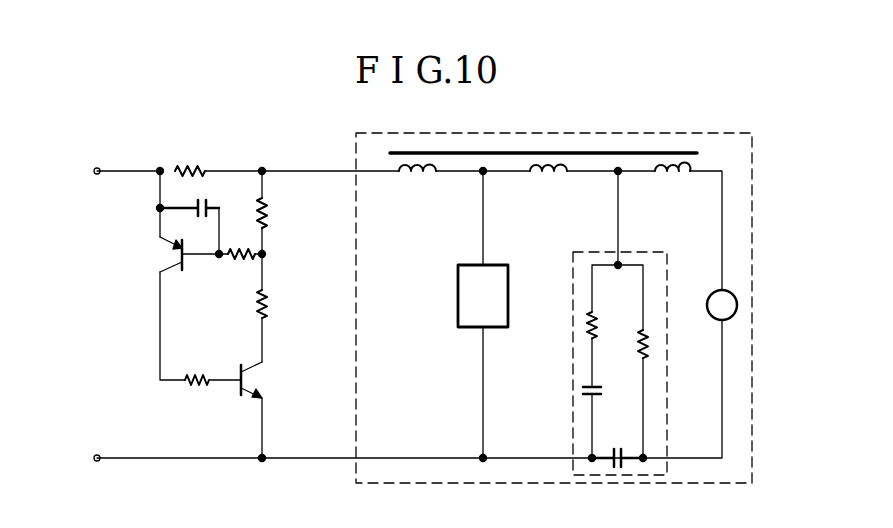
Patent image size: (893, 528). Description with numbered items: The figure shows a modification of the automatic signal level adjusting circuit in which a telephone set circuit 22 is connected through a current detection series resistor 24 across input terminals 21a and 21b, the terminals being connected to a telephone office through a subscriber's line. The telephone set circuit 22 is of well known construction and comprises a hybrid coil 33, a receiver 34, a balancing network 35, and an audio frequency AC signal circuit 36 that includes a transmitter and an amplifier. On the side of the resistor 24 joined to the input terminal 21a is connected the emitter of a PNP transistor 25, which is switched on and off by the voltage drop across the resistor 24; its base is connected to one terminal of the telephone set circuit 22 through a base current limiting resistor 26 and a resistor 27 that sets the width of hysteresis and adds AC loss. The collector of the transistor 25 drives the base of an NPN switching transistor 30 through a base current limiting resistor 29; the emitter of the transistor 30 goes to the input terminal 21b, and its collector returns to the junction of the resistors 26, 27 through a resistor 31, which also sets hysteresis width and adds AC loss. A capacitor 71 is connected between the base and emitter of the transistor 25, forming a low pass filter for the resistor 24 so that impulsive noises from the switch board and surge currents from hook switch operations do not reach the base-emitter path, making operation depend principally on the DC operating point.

The input terminal 21a is at (102, 159).
The input terminal 21b is at (102, 446).
The current detection series resistor 24 is at (190, 158).
The capacitor 71 is at (191, 196).
The resistor 27 is at (274, 214).
The PNP transistor 25 is at (180, 254).
The base current limiting resistor 26 is at (241, 270).
The resistor 31 is at (274, 306).
The base current limiting resistor 29 is at (197, 368).
The NPN type switching transistor 30 is at (261, 410).
The telephone set circuit 22 is at (577, 133).
The hybrid coil 33 is at (700, 162).
The receiver 34 is at (710, 307).
The balancing network 35 is at (648, 252).
The audio frequency AC signal circuit 36 is at (483, 296).